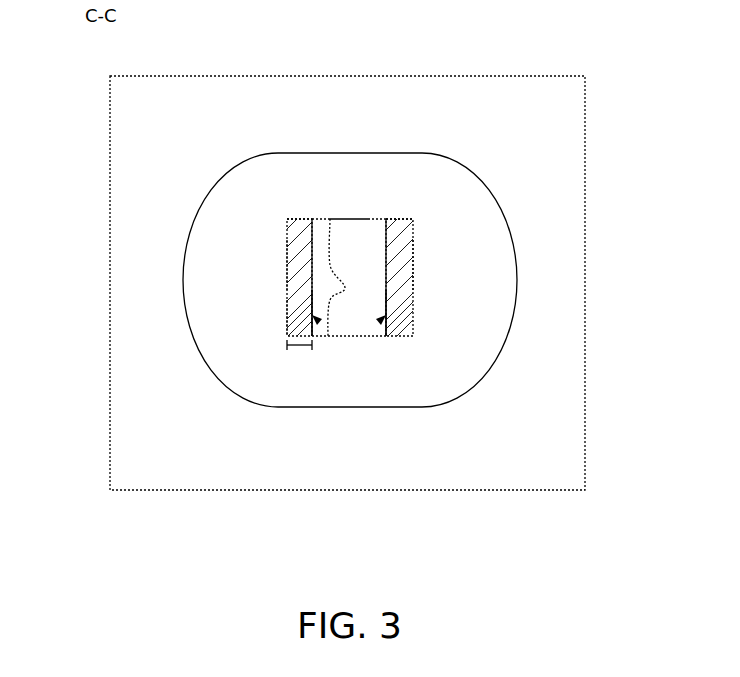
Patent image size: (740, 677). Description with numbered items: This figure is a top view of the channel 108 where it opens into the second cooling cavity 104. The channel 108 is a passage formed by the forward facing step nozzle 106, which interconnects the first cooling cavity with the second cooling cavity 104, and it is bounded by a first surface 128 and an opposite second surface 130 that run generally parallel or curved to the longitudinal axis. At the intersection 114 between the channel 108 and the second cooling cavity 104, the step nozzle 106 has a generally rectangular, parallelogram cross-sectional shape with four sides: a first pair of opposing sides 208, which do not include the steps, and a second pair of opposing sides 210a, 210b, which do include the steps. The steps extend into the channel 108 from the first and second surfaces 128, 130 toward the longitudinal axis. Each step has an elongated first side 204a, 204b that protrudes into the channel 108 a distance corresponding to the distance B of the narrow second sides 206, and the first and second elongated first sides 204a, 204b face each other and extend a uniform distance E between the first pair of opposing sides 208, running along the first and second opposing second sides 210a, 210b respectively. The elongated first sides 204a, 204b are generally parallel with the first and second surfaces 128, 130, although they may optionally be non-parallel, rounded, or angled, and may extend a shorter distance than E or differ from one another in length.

The second cooling cavity 104 is at (490, 315).
The forward facing step nozzle 106 is at (342, 237).
The channel 108 is at (368, 252).
The intersection 114 is at (287, 320).
The first surface 128 is at (413, 230).
The second surface 130 is at (287, 235).
The first elongated first side 204a is at (316, 320).
The second elongated first side 204b is at (383, 320).
The narrow second sides 206 is at (300, 218).
The first pair of opposing sides 208 is at (366, 218).
The first opposing second side 210a is at (287, 263).
The second opposing second side 210b is at (413, 260).